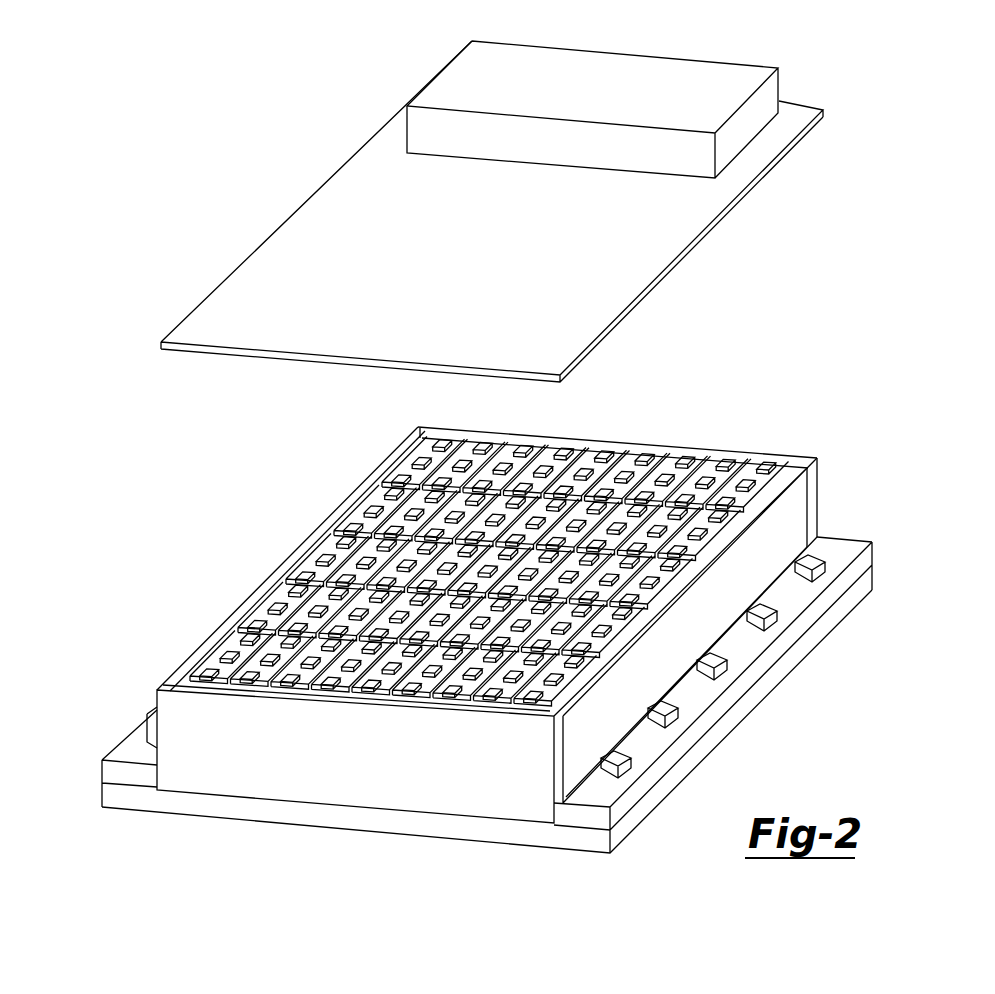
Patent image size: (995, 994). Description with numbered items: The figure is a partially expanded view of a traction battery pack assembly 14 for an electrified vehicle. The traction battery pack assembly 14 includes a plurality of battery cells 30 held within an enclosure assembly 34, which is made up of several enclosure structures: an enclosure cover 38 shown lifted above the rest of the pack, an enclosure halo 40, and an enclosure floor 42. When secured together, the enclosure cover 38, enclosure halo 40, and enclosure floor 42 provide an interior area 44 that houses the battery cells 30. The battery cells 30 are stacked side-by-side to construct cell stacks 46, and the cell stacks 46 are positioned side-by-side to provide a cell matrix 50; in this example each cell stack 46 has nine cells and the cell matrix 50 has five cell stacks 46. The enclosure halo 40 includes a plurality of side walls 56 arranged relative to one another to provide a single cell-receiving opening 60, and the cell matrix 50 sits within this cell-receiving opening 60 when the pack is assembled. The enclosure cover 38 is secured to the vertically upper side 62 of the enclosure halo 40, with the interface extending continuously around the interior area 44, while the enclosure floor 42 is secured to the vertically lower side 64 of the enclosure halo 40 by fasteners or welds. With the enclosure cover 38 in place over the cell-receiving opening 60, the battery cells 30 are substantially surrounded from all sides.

The traction battery pack assembly 14 is at (197, 206).
The battery cells 30 is at (747, 493).
The enclosure assembly 34 is at (205, 297).
The enclosure cover 38 is at (337, 165).
The enclosure halo 40 is at (157, 743).
The enclosure floor 42 is at (133, 812).
The interior area 44 is at (704, 543).
The cell stacks 46 is at (382, 476).
The cell matrix 50 is at (498, 574).
The side walls 56 is at (452, 425).
The cell-receiving opening 60 is at (661, 458).
The vertically upper side 62 is at (787, 462).
The vertically lower side 64 is at (393, 818).